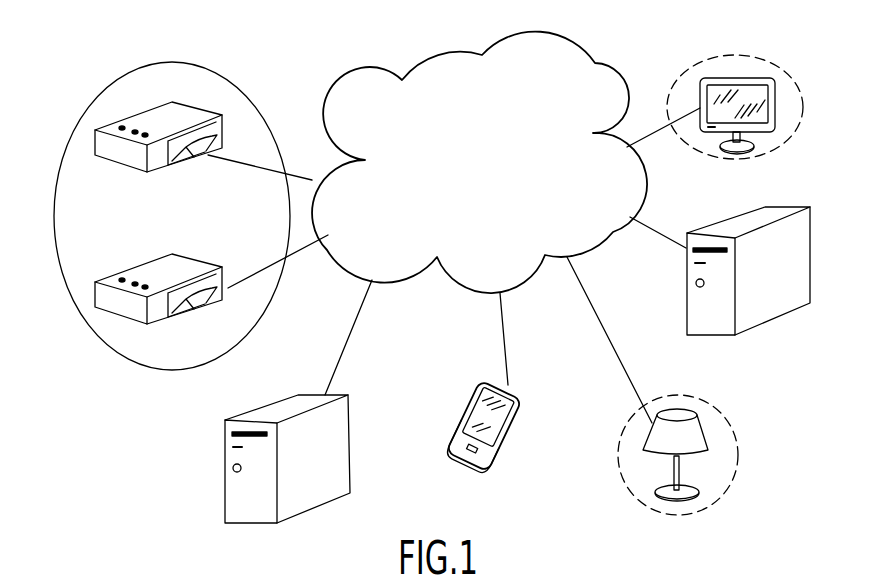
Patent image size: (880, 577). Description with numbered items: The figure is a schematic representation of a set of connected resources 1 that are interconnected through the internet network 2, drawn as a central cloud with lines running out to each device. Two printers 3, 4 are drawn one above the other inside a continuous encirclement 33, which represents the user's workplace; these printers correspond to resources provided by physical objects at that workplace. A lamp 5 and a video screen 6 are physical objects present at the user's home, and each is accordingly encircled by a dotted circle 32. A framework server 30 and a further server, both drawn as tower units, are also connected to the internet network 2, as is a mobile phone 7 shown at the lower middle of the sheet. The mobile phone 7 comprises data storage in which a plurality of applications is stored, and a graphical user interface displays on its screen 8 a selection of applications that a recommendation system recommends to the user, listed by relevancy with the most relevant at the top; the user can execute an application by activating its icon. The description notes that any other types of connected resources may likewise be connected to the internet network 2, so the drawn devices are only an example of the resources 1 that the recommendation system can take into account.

The connected resources 1 is at (95, 292).
The internet network 2 is at (373, 75).
The printer 3 is at (143, 260).
The printer 4 is at (140, 110).
The lamp 5 is at (780, 318).
The video screen 6 is at (778, 78).
The mobile phone 7 is at (496, 439).
The screen 8 is at (498, 418).
The framework server 30 is at (225, 500).
The dotted circle 32 is at (703, 58).
The continuous encirclement 33 is at (240, 90).